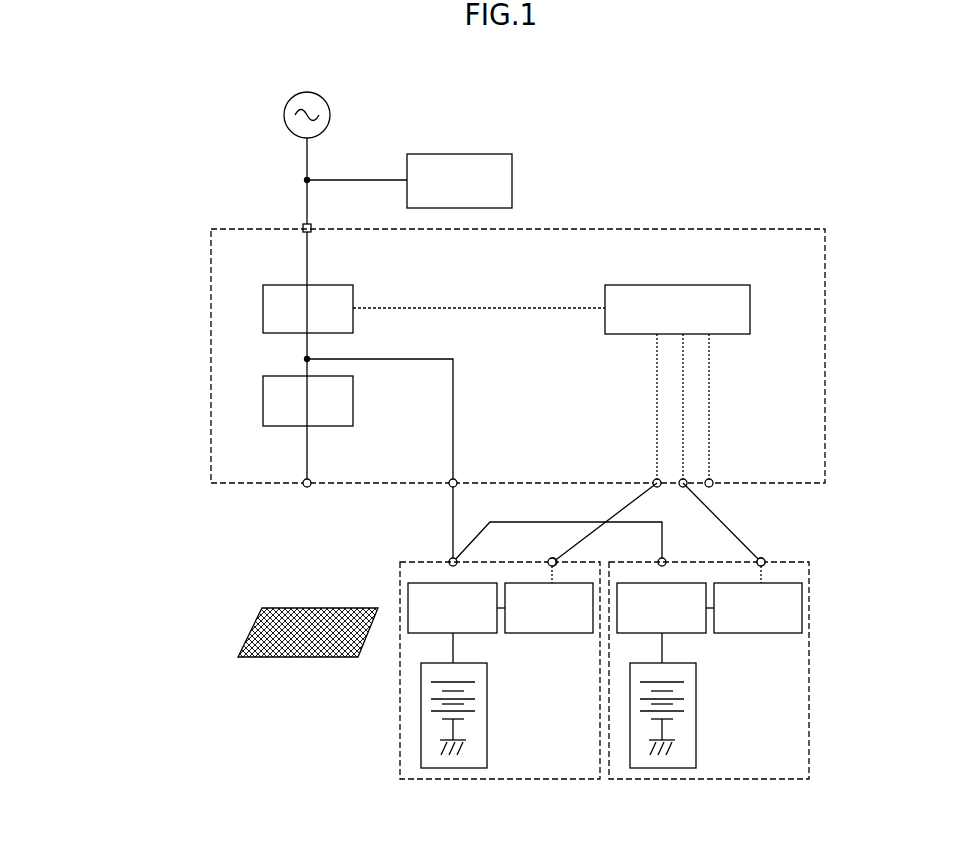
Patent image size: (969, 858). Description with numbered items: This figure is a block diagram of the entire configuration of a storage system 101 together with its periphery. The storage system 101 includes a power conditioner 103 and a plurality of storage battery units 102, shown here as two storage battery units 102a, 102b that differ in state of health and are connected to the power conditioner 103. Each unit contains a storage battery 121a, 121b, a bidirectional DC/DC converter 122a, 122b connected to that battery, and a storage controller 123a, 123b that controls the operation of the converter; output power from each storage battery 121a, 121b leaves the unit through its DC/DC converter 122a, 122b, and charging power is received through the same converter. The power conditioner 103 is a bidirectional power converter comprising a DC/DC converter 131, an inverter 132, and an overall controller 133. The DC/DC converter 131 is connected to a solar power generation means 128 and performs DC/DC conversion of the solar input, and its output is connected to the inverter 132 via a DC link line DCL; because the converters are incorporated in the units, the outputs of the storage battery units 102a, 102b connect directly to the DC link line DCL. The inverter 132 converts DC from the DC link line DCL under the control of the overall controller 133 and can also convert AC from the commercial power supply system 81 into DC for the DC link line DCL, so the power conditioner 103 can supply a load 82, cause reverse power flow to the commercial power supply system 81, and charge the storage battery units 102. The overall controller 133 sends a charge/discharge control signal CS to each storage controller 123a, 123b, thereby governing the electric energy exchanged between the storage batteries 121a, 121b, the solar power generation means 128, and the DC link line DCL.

The storage system 101 is at (752, 208).
The commercial power supply system 81 is at (330, 112).
The load 82 is at (484, 153).
The power conditioner 103 is at (212, 415).
The inverter 132 is at (353, 293).
The DC/DC converter 131 is at (353, 402).
The overall controller 133 is at (750, 296).
The solar power generation means 128 is at (333, 608).
The storage battery unit 102 is at (610, 685).
The storage battery unit 102a is at (505, 685).
The storage battery unit 102b is at (714, 685).
The storage battery 121a is at (487, 745).
The storage battery 121b is at (696, 745).
The DC/DC converter 122a is at (487, 633).
The DC/DC converter 122b is at (696, 633).
The storage controller 123a is at (558, 633).
The storage controller 123b is at (767, 633).
The DC link line DCL is at (453, 395).
The charge/discharge control signal CS is at (657, 405).